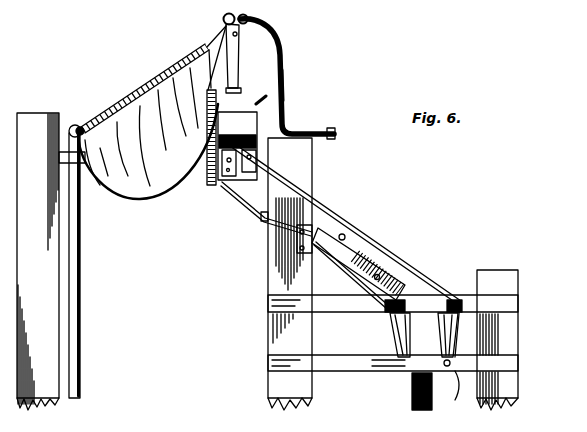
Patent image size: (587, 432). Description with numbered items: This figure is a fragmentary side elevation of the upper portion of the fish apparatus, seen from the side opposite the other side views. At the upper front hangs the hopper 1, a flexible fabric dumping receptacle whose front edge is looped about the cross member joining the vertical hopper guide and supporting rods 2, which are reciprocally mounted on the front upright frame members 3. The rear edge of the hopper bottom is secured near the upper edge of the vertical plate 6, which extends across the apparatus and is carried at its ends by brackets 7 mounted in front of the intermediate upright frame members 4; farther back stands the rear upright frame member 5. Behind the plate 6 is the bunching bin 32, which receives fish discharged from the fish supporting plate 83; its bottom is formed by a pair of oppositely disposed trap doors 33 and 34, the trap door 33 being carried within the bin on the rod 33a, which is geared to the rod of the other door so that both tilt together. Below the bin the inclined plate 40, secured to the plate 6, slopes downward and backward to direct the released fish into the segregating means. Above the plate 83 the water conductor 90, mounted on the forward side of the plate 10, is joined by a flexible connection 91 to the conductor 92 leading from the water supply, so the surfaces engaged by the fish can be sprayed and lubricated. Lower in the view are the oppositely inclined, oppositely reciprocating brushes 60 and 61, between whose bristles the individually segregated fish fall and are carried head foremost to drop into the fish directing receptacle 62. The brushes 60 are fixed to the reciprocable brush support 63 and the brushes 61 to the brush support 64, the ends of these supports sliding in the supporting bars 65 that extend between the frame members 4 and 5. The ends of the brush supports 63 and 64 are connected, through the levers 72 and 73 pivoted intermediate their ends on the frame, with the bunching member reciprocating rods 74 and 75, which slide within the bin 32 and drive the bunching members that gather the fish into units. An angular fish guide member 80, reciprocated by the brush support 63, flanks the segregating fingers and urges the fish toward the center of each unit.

The hopper 1 is at (122, 193).
The vertical hopper guide and supporting rods 2 is at (80, 257).
The front upright frame members 3 is at (45, 302).
The intermediate upright frame members 4 is at (270, 328).
The rear upright frame member 5 is at (516, 285).
The vertical plate 6 is at (222, 102).
The brackets 7 is at (185, 55).
The plate 10 is at (240, 64).
The bunching bin 32 is at (265, 110).
The trap door 33 is at (228, 190).
The rod 33a is at (217, 187).
The trap door 34 is at (243, 188).
The inclined plate 40 is at (262, 212).
The brush 60 is at (397, 335).
The brush 61 is at (448, 338).
The fish directing receptacle 62 is at (413, 399).
The brush support 63 is at (391, 352).
The brush support 64 is at (457, 381).
The supporting bars 65 is at (319, 358).
The lever 72 is at (290, 195).
The lever 73 is at (378, 246).
The bunching member reciprocating rod 74 is at (208, 150).
The bunching member reciprocating rod 75 is at (290, 127).
The fish guide member 80 is at (394, 270).
The fish supporting plate 83 is at (233, 90).
The conductor 90 is at (224, 20).
The flexible connection 91 is at (258, 23).
The conductor 92 is at (286, 80).